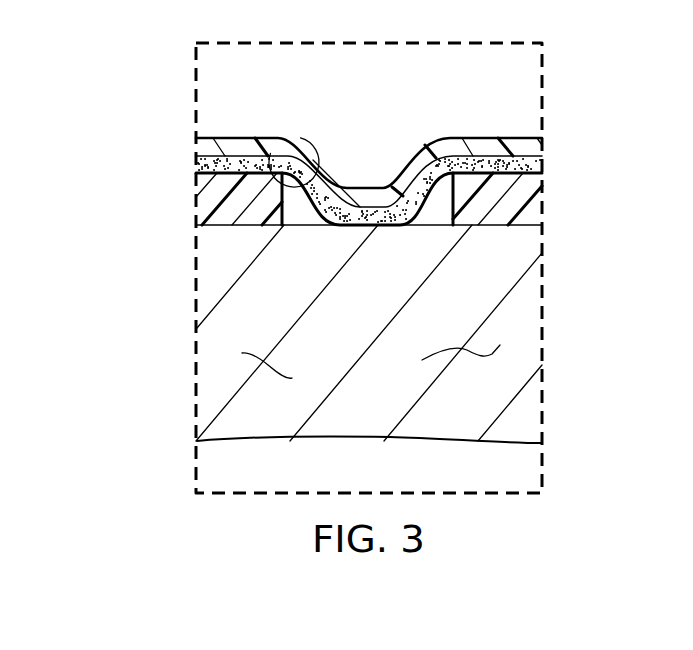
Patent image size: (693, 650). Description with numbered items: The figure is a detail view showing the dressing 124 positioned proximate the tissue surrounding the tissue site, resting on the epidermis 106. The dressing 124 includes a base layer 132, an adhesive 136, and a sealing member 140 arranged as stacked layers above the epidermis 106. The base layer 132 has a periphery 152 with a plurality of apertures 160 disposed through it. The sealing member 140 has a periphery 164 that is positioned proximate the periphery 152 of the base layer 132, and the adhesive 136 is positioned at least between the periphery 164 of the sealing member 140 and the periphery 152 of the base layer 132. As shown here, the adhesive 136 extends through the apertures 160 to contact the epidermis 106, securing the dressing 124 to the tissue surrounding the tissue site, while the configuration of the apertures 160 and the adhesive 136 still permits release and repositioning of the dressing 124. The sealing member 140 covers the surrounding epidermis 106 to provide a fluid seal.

The epidermis 106 is at (388, 399).
The dressing 124 is at (392, 114).
The base layer 132 is at (367, 198).
The periphery 152 is at (205, 200).
The adhesive 136 is at (205, 164).
The sealing member 140 is at (420, 129).
The periphery 164 is at (520, 137).
The apertures 160 is at (301, 138).